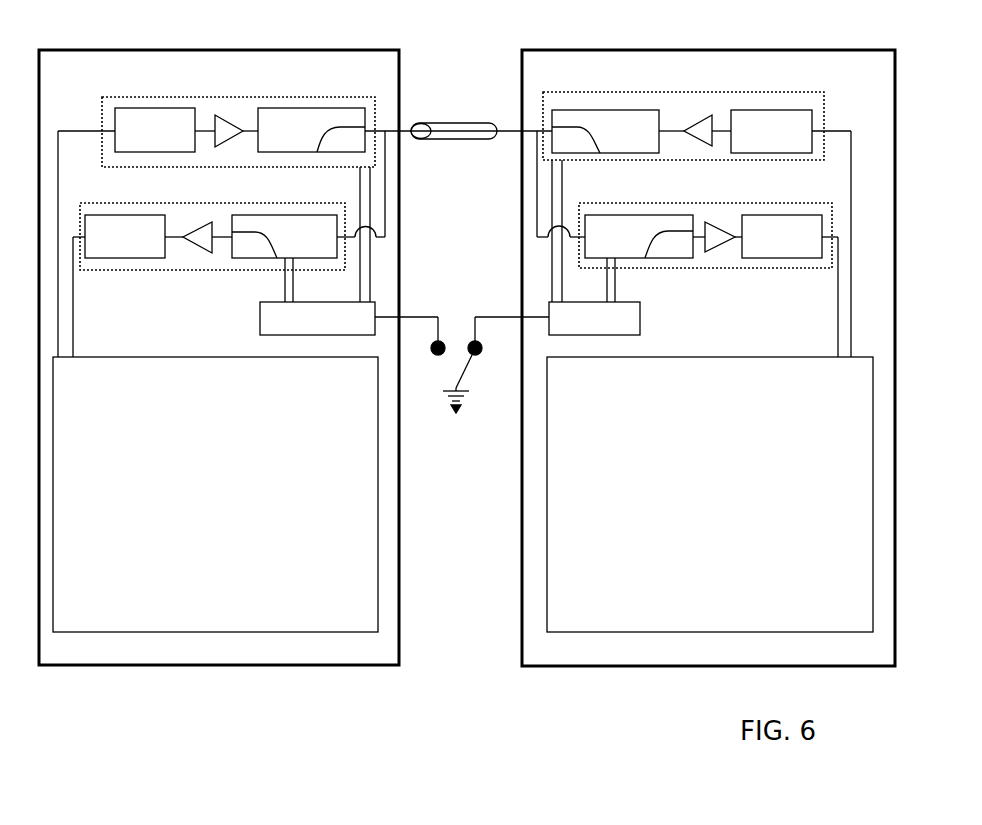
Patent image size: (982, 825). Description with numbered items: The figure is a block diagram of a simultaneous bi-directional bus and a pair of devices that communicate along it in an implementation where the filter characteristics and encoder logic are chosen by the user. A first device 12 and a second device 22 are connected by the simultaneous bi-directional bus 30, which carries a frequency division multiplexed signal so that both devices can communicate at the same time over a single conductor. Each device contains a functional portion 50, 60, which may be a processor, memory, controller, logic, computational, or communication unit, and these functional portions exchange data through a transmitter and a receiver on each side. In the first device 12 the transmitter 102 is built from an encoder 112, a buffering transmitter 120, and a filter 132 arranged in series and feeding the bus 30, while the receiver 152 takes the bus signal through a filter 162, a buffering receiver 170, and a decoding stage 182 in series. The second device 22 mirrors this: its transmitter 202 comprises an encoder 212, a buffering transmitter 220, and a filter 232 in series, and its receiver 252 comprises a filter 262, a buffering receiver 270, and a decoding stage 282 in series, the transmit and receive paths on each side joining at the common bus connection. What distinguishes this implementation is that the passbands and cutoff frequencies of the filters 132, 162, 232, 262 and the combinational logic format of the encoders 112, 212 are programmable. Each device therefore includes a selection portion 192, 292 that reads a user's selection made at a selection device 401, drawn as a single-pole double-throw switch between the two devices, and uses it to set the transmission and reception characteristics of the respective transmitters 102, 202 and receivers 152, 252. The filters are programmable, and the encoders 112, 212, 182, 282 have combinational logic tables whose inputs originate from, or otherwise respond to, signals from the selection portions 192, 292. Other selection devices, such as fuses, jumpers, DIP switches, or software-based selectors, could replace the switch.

The device 12 is at (115, 50).
The device 22 is at (579, 50).
The simultaneous bi-directional bus 30 is at (457, 123).
The functional portion 50 is at (215, 494).
The functional portion 60 is at (710, 494).
The transmitter 102 is at (165, 96).
The encoder 112 is at (155, 130).
The buffering transmitter 120 is at (226, 115).
The filter 132 is at (311, 130).
The receiver 152 is at (92, 203).
The filter 162 is at (284, 236).
The buffering receiver 170 is at (203, 222).
The encoder 182 is at (125, 236).
The selection portion 192 is at (317, 318).
The transmitter 202 is at (625, 92).
The encoder 212 is at (771, 131).
The buffering transmitter 220 is at (702, 115).
The filter 232 is at (605, 131).
The receiver 252 is at (685, 203).
The filter 262 is at (639, 236).
The buffering receiver 270 is at (720, 222).
The encoder 282 is at (782, 236).
The selection portion 292 is at (594, 318).
The selection device 401 is at (466, 362).